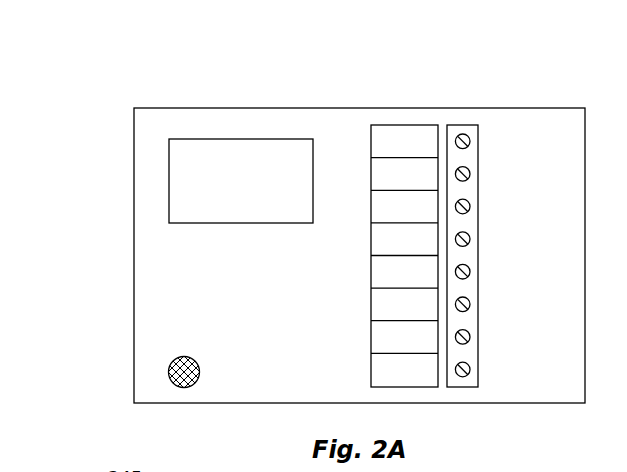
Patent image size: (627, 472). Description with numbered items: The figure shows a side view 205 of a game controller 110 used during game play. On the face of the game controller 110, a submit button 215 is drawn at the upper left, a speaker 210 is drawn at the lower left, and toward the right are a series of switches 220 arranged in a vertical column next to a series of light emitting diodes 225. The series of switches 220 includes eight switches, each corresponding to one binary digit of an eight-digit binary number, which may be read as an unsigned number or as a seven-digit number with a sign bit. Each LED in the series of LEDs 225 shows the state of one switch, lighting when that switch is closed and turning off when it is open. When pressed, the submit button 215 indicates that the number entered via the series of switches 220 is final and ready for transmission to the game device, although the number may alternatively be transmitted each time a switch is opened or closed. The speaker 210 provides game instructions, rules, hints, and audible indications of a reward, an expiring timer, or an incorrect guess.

The game controller 110 is at (157, 108).
The side view 205 is at (215, 60).
The speaker 210 is at (169, 366).
The submit button 215 is at (241, 181).
The series of switches 220 is at (405, 124).
The series of light emitting diodes (LEDs) 225 is at (465, 124).